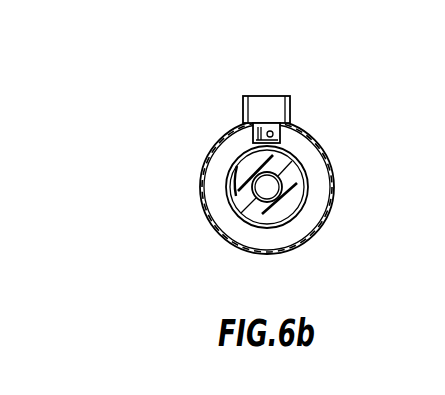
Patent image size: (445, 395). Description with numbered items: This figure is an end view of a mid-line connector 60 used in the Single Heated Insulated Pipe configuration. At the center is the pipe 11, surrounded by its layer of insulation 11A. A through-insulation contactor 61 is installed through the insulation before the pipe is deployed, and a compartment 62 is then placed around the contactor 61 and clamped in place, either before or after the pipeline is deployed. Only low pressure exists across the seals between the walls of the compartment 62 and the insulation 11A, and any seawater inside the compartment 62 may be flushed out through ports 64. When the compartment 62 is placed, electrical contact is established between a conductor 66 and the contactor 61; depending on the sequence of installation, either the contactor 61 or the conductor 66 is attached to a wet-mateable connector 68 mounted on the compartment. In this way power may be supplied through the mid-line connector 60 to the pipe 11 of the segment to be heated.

The mid-line connector 60 is at (178, 129).
The compartment 62 is at (312, 215).
The conductor 66 is at (305, 137).
The through-insulation contactor 61 is at (303, 188).
The pipe 11 is at (257, 204).
The insulation 11A is at (255, 194).
The wet-mateable connector 68 is at (270, 105).
The ports 64 is at (255, 143).